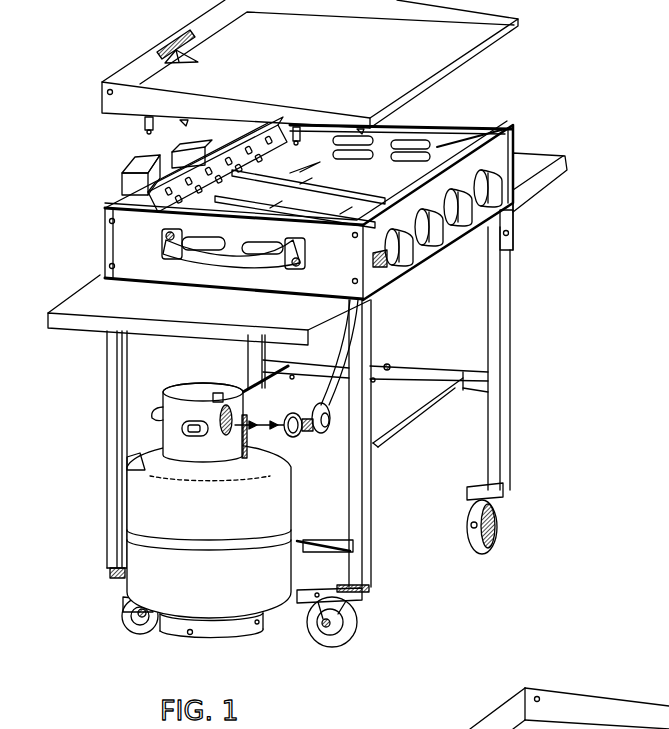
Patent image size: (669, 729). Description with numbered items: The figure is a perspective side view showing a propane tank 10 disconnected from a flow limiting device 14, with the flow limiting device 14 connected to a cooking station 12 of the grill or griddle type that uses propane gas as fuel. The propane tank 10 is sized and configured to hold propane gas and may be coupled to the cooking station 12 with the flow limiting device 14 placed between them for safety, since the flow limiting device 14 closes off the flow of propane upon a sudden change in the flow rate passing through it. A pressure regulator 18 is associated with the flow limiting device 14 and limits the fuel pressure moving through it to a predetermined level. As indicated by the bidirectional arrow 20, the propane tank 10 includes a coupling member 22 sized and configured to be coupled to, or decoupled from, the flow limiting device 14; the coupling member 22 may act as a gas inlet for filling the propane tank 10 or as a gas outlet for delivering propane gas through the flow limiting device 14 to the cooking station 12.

The propane tank 10 is at (144, 584).
The cooking station 12 is at (526, 277).
The flow limiting device 14 is at (335, 400).
The pressure regulator 18 is at (331, 434).
The bidirectional arrow 20 is at (249, 418).
The coupling member 22 is at (241, 430).